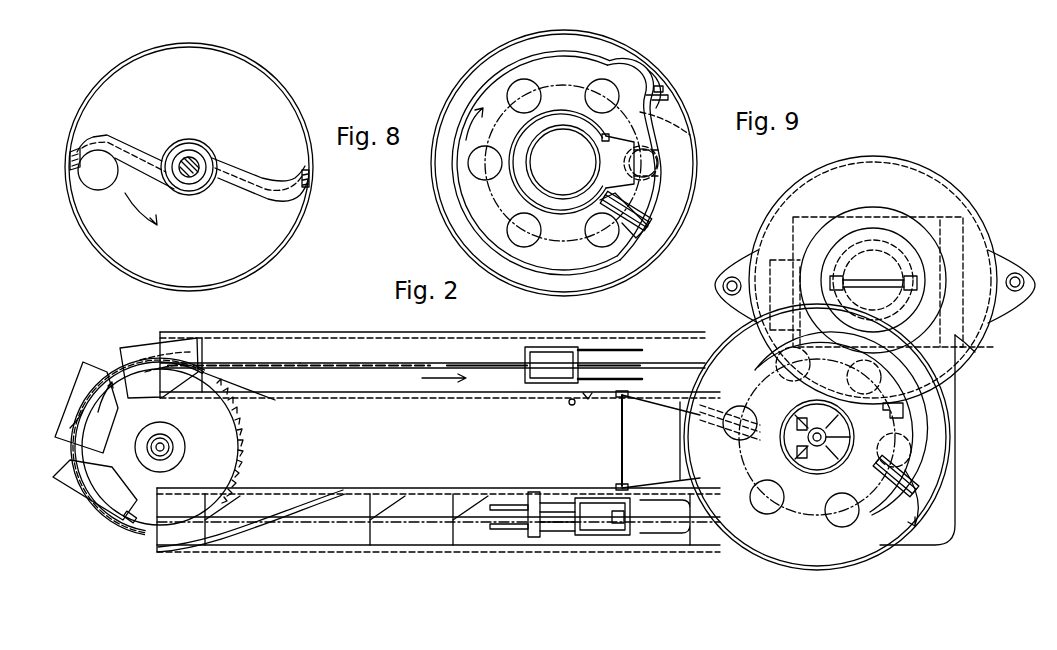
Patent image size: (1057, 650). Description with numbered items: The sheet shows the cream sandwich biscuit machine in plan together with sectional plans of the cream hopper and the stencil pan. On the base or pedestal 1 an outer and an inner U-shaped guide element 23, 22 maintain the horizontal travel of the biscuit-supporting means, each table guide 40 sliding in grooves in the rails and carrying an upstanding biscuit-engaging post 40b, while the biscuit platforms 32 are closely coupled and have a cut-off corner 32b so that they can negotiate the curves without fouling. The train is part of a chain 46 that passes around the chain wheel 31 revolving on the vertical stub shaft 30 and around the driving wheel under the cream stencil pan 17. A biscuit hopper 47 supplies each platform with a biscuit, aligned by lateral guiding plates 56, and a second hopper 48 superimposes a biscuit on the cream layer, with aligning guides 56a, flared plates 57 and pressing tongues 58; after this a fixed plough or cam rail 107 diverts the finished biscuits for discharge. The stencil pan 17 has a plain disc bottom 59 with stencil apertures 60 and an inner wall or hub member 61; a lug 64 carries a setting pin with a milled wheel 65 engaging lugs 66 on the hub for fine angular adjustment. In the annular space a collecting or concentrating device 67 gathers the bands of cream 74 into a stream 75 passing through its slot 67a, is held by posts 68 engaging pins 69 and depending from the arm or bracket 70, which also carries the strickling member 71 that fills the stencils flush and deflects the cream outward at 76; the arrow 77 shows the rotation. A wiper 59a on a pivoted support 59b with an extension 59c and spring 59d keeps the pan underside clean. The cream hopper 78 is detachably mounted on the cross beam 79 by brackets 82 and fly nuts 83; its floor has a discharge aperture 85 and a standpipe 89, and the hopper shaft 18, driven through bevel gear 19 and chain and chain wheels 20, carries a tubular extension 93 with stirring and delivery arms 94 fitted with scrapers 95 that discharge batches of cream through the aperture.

In FIG. 2, the base or pedestal 1 is at (955, 393).
In FIG. 9, the cream stencil pan 17 is at (520, 46).
In FIG. 2, the cream stencil pan 17 is at (950, 440).
In FIG. 8, the hopper shaft 18 is at (187, 176).
In FIG. 2, the bevel gear 19 is at (878, 232).
In FIG. 2, the chain and chain wheels 20 is at (965, 230).
In FIG. 2, the inner U-shaped guide element 22 is at (481, 396).
In FIG. 2, the outer U-shaped guide element 23 is at (302, 342).
In FIG. 2, the vertical stub shaft 30 is at (172, 444).
In FIG. 2, the chain wheel 31 is at (238, 456).
In FIG. 2, the biscuit platform 32 is at (130, 358).
In FIG. 2, the cut-off corner of biscuit platform 32b is at (262, 390).
In FIG. 2, the table guide 40 is at (236, 356).
In FIG. 2, the biscuit-engaging post 40b is at (128, 522).
In FIG. 2, the chain 46 is at (346, 362).
In FIG. 2, the biscuit hopper 47 is at (528, 347).
In FIG. 2, the biscuit hopper 48 is at (607, 536).
In FIG. 2, the lateral guiding plates 56 is at (598, 348).
In FIG. 2, the aligning guides 56a is at (560, 535).
In FIG. 2, the flared plates 57 is at (688, 537).
In FIG. 2, the resilient tongues 58 is at (505, 529).
In FIG. 9, the plain disc bottom 59 is at (492, 88).
In FIG. 2, the wiper 59a is at (742, 426).
In FIG. 2, the pivoted support 59b is at (648, 411).
In FIG. 2, the extension 59c is at (586, 400).
In FIG. 2, the spring 59d is at (568, 404).
In FIG. 9, the stencil apertures 60 is at (516, 224).
In FIG. 2, the stencil apertures 60 is at (857, 521).
In FIG. 9, the inner wall or hub member 61 is at (527, 161).
In FIG. 2, the inner wall or hub member 61 is at (797, 417).
In FIG. 2, the lug 64 is at (803, 452).
In FIG. 2, the milled wheel 65 is at (797, 424).
In FIG. 2, the projections or lugs 66 is at (797, 456).
In FIG. 9, the collecting or concentrating device 67 is at (652, 76).
In FIG. 2, the collecting or concentrating device 67 is at (992, 348).
In FIG. 9, the slot or aperture 67a is at (672, 132).
In FIG. 9, the posts 68 is at (668, 98).
In FIG. 9, the projecting pins 69 is at (601, 142).
In FIG. 2, the arm or bracket 70 is at (903, 410).
In FIG. 9, the strickling member 71 is at (645, 220).
In FIG. 2, the strickling member 71 is at (907, 484).
In FIG. 9, the streams or bands of cream 74 is at (612, 52).
In FIG. 2, the streams or bands of cream 74 is at (841, 423).
In FIG. 9, the stream of cream 75 is at (660, 164).
In FIG. 9, the deflection of cream 76 is at (604, 190).
In FIG. 9, the arrow 77 is at (466, 120).
In FIG. 8, the cream hopper 78 is at (300, 118).
In FIG. 2, the cream hopper 78 is at (951, 184).
In FIG. 2, the cross support or beam 79 is at (786, 272).
In FIG. 2, the brackets 82 is at (996, 250).
In FIG. 2, the fly nuts 83 is at (1017, 273).
In FIG. 8, the discharge aperture 85 is at (92, 175).
In FIG. 8, the standpipe 89 is at (201, 155).
In FIG. 8, the tubular extension 93 is at (192, 139).
In FIG. 8, the stirring and delivery arms 94 is at (132, 152).
In FIG. 8, the scrapers 95 is at (72, 158).
In FIG. 2, the fixed plough or cam rail 107 is at (254, 515).